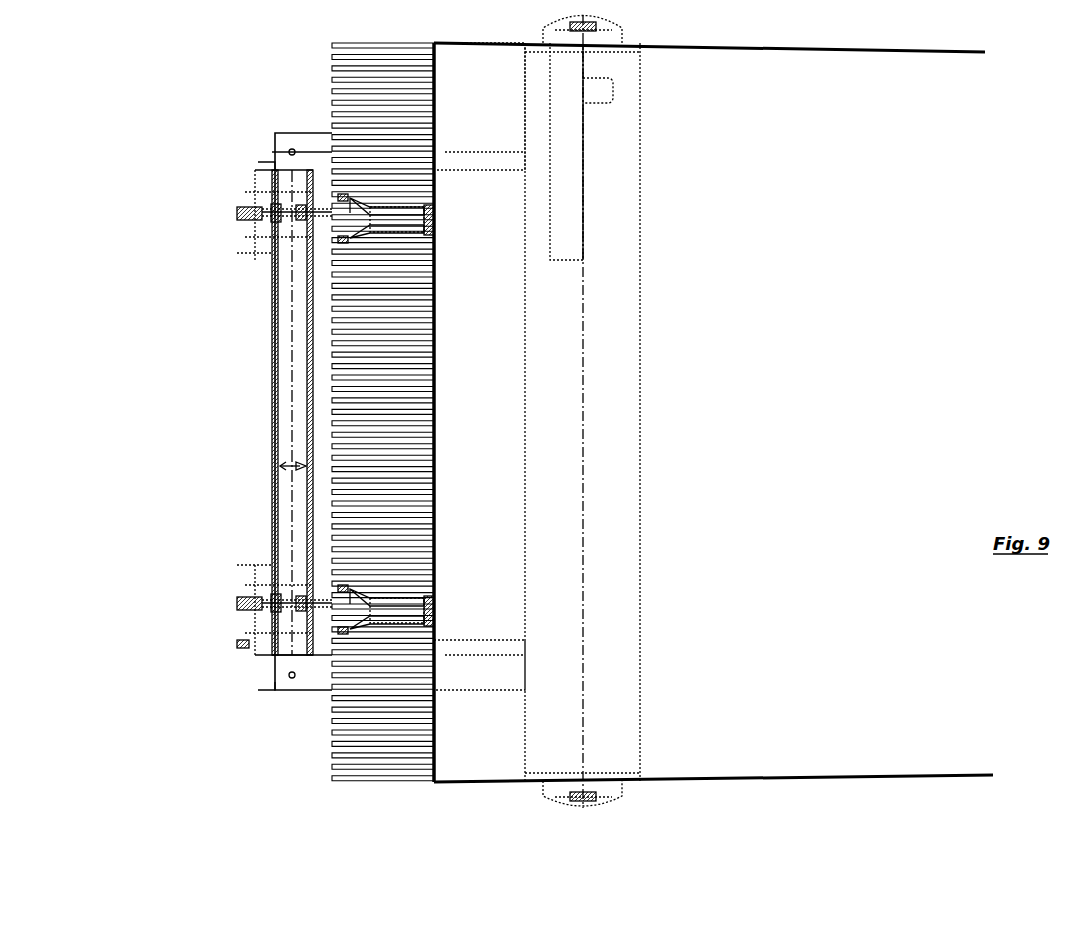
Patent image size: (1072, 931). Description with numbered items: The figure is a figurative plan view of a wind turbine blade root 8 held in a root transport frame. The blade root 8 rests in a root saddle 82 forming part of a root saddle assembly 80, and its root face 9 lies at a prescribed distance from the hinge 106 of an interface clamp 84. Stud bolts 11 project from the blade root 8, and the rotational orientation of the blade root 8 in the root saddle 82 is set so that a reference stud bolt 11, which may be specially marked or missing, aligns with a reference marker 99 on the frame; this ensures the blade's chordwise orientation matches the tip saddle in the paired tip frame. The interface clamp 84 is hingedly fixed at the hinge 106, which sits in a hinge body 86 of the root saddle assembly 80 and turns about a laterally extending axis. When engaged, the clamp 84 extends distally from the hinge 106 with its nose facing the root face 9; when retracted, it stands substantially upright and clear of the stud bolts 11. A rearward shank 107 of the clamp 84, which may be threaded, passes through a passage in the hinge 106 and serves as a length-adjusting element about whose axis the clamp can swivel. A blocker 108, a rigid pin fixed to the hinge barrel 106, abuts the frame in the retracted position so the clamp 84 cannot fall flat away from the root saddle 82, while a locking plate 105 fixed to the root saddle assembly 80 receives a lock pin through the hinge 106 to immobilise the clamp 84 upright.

The root saddle assembly 80 is at (215, 90).
The blade root 8 is at (865, 670).
The root face 9 is at (436, 360).
The stud bolts 11 is at (345, 738).
The root saddle 82 is at (612, 183).
The hinge body 86 is at (247, 193).
The shank 107 is at (237, 212).
The hinge 106 is at (265, 227).
The interface clamp 84 is at (343, 593).
The reference marker 99 is at (278, 466).
The blocker 108 is at (247, 563).
The locking plate 105 is at (262, 653).